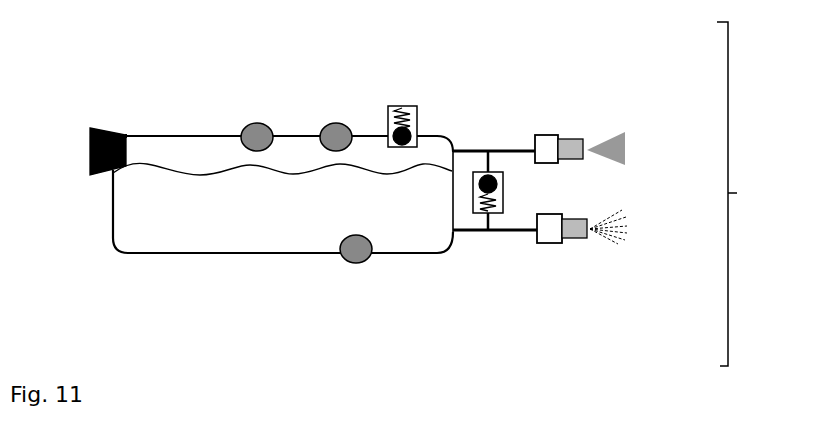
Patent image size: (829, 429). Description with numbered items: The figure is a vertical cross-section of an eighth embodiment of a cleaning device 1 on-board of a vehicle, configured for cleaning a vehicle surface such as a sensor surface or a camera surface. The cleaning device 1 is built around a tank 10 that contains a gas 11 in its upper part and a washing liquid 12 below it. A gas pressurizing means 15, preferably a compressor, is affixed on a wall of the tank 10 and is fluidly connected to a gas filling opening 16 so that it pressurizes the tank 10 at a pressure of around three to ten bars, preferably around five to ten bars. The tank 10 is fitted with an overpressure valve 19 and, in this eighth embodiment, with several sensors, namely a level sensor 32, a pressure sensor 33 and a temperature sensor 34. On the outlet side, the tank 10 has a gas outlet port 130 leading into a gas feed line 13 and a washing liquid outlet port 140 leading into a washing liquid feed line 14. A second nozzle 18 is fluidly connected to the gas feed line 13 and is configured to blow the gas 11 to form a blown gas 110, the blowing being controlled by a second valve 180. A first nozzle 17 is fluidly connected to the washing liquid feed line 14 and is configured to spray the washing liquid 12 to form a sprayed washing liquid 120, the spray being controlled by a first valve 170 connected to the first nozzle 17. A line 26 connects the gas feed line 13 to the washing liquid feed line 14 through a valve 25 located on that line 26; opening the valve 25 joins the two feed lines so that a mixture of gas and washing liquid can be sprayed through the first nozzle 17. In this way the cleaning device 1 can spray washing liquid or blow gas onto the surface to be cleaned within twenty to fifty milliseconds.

The cleaning device 1 is at (763, 194).
The tank 10 is at (102, 212).
The gas 11 is at (200, 146).
The washing liquid 12 is at (155, 241).
The gas feed line 13 is at (491, 143).
The washing liquid feed line 14 is at (511, 234).
The gas pressurizing means 15 is at (104, 126).
The gas filling opening 16 is at (126, 133).
The first nozzle 17 is at (583, 245).
The second nozzle 18 is at (572, 137).
The overpressure valve 19 is at (403, 95).
The valve 25 is at (508, 196).
The line 26 is at (495, 158).
The level sensor 32 is at (356, 268).
The pressure sensor 33 is at (336, 119).
The temperature sensor 34 is at (257, 119).
The blown gas 110 is at (630, 130).
The sprayed washing liquid 120 is at (630, 211).
The gas outlet port 130 is at (453, 148).
The washing liquid outlet port 140 is at (457, 237).
The first valve 170 is at (553, 246).
The second valve 180 is at (545, 132).